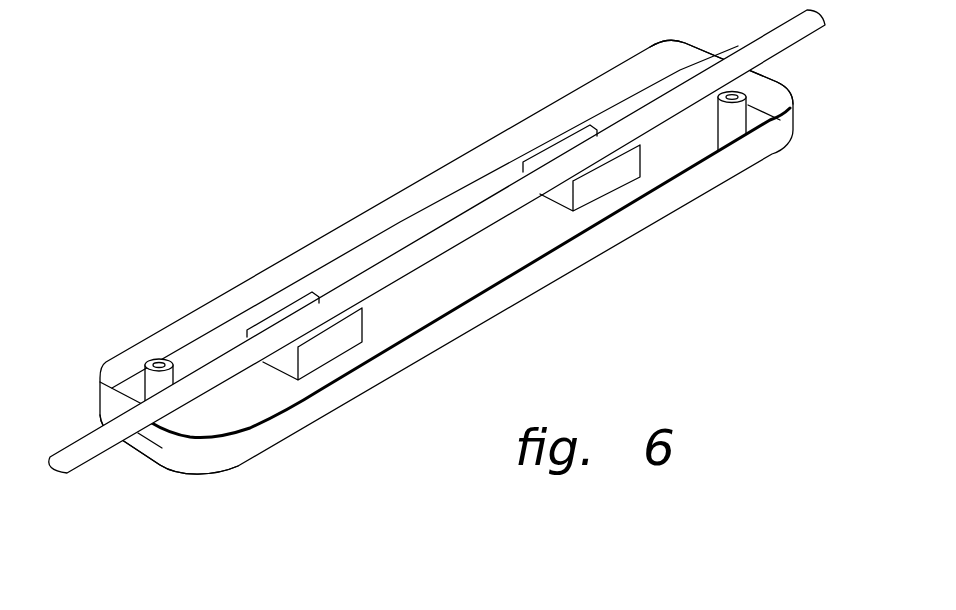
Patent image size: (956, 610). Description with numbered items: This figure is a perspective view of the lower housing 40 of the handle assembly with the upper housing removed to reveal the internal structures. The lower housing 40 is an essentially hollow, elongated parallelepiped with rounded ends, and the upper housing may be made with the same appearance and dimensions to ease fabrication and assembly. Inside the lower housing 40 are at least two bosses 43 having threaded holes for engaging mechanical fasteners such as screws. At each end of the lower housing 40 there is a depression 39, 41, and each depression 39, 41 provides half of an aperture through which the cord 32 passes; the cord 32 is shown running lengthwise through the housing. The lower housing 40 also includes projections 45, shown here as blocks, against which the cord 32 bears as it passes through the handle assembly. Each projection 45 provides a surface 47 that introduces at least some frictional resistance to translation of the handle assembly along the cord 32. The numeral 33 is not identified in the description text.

The cord 32 is at (87, 436).
The housing base 33 is at (175, 472).
The depression 39 is at (160, 447).
The lower housing 40 is at (568, 252).
The depression 41 is at (750, 72).
The boss 43 is at (156, 361).
The projection 45 is at (345, 334).
The surface 47 is at (300, 298).